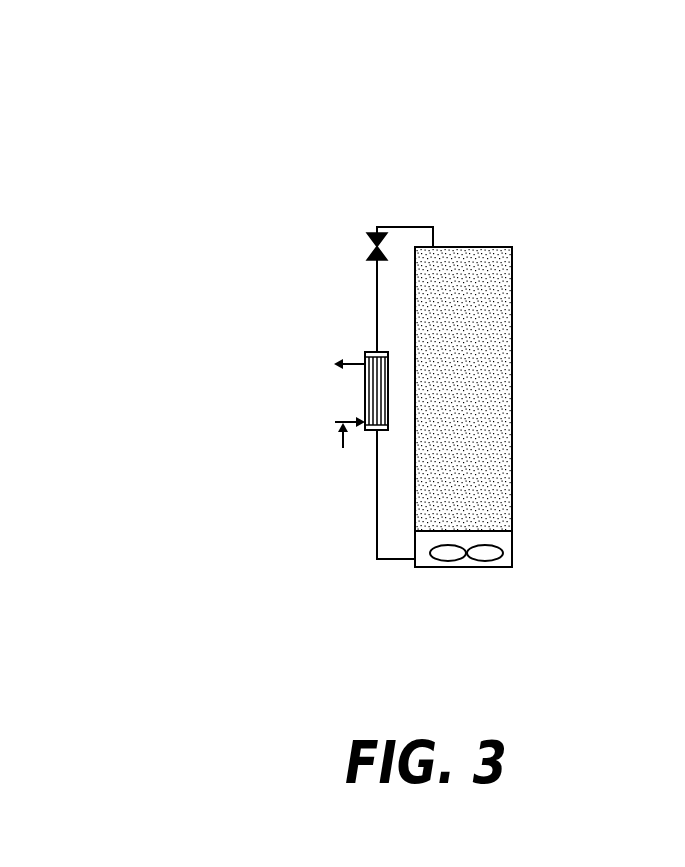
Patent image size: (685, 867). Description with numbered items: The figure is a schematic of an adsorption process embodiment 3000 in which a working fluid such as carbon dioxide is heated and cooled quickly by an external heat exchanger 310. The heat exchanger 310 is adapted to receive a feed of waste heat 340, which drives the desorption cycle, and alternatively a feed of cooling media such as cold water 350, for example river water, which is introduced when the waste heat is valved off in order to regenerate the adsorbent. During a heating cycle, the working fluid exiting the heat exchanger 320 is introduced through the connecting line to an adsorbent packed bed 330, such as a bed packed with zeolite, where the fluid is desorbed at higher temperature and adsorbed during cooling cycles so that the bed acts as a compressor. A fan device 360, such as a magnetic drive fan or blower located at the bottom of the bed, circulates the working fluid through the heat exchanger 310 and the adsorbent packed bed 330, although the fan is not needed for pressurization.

The adsorption process embodiment 3000 is at (461, 132).
The adsorbent packed bed 330 is at (503, 287).
The fan device 360 is at (467, 557).
The working fluid exiting the heat exchanger 320 is at (377, 510).
The external heat exchanger 310 is at (365, 388).
The cold water feed 350 is at (335, 420).
The waste heat feed 340 is at (343, 457).